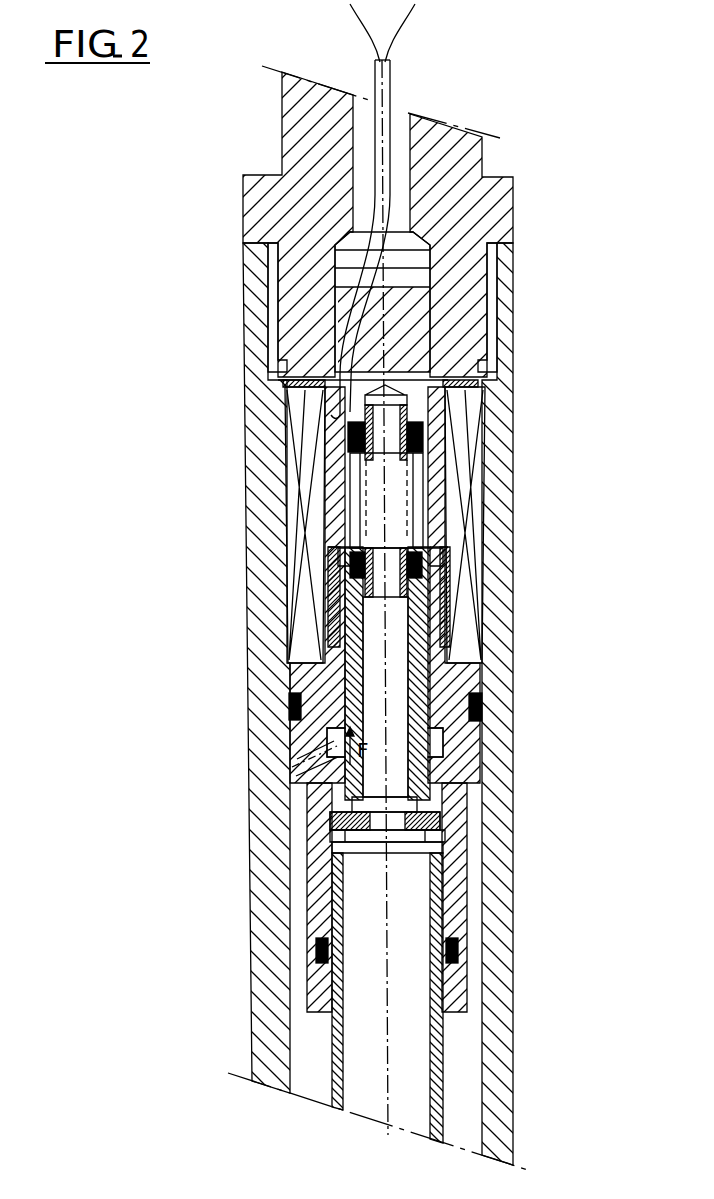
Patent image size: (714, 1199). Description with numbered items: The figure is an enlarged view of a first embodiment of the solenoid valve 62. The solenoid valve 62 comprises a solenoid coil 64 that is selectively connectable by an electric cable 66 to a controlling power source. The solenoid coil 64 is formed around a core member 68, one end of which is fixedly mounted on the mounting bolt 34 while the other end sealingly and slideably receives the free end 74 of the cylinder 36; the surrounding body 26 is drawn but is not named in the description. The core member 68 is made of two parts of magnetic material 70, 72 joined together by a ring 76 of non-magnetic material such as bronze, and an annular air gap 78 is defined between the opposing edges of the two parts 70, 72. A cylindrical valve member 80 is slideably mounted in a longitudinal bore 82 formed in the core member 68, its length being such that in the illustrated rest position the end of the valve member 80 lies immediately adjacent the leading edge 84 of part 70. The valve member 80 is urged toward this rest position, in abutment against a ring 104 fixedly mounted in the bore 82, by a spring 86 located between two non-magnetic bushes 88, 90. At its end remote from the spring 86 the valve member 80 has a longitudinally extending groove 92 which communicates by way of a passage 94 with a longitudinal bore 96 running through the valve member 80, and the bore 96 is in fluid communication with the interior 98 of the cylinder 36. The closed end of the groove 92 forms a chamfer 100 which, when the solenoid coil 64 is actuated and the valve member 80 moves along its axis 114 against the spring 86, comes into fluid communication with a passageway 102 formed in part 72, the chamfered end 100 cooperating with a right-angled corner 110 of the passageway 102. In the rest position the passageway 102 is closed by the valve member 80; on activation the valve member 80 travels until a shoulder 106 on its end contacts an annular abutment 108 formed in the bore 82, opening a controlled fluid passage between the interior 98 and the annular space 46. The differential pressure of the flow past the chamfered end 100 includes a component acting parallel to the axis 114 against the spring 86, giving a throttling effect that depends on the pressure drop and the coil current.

The housing 26 is at (265, 513).
The mounting bolt 34 is at (495, 200).
The cylinder 36 is at (333, 1078).
The annular space 46 is at (300, 1060).
The solenoid valve 62 is at (530, 606).
The solenoid coil 64 is at (477, 482).
The electric cable 66 is at (386, 86).
The core member 68 is at (485, 745).
The first part of magnetic material 70 is at (412, 305).
The second part of magnetic material 72 is at (457, 905).
The free end of cylinder 74 is at (327, 983).
The ring of non-magnetic material 76 is at (327, 590).
The annular air gap 78 is at (440, 587).
The valve member 80 is at (437, 660).
The longitudinal bore 82 is at (332, 558).
The leading edge 84 is at (332, 577).
The spring 86 is at (366, 480).
The non-magnetic bush 88 is at (408, 548).
The non-magnetic bush 90 is at (388, 447).
The longitudinally extending groove 92 is at (342, 800).
The passage 94 is at (340, 845).
The longitudinal bore 96 is at (387, 700).
The interior of cylinder 98 is at (356, 1061).
The chamfer 100 is at (387, 745).
The passageway 102 is at (330, 748).
The ring 104 is at (386, 842).
The shoulder 106 is at (385, 598).
The annular abutment 108 is at (432, 535).
The right-angled corner 110 is at (333, 762).
The axis 114 is at (387, 992).